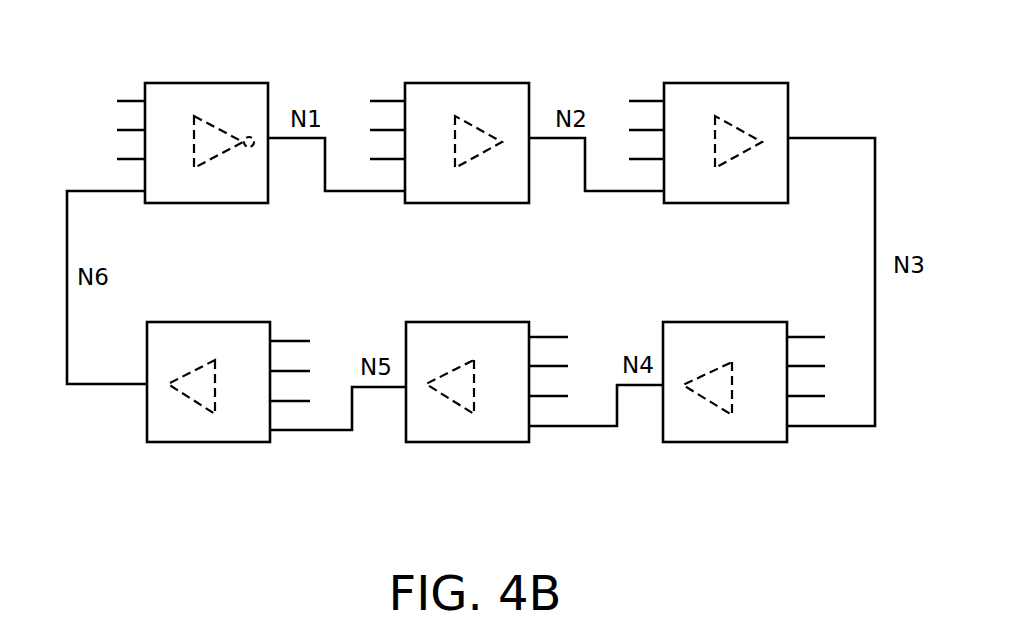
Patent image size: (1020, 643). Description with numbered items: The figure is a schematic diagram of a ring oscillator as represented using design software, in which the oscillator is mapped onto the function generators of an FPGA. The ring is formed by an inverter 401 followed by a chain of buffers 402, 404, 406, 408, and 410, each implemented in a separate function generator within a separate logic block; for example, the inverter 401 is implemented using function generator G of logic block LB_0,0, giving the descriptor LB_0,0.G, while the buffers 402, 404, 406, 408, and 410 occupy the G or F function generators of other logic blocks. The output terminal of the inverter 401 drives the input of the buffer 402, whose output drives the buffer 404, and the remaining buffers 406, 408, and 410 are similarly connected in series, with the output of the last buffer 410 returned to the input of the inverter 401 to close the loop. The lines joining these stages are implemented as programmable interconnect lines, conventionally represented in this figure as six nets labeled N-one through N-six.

The inverter 401 is at (216, 125).
The buffer 402 is at (477, 123).
The buffer 404 is at (735, 124).
The buffer 406 is at (712, 372).
The buffer 408 is at (453, 372).
The buffer 410 is at (205, 368).